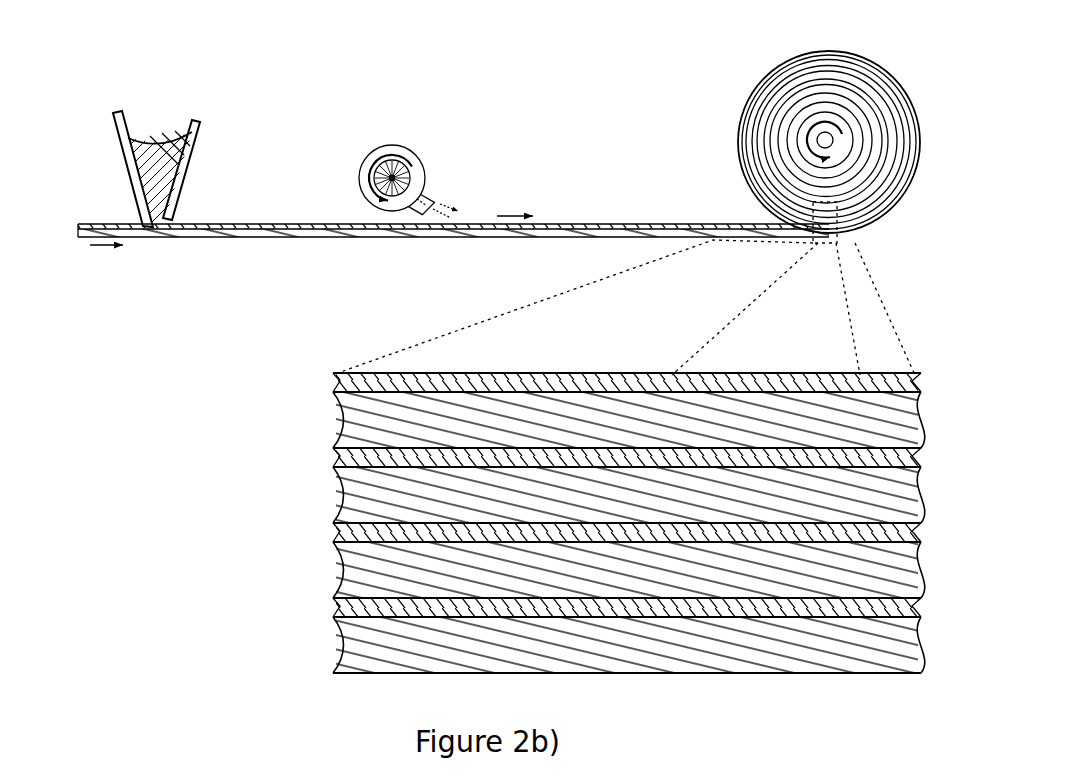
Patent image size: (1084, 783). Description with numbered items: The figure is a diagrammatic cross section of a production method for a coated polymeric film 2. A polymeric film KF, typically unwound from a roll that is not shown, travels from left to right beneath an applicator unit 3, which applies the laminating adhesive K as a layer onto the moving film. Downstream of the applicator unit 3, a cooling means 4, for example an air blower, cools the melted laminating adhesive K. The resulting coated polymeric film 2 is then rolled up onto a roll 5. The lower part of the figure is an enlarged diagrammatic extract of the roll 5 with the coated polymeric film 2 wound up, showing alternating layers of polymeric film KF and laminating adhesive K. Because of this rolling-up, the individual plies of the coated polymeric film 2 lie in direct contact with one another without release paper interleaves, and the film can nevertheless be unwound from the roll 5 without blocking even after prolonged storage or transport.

The coated polymeric film 2 is at (688, 213).
The applicator unit 3 is at (132, 168).
The cooling means 4 is at (415, 162).
The roll of a coated polymeric film 5 is at (765, 118).
The laminating adhesive K is at (230, 224).
The polymeric film KF is at (223, 232).